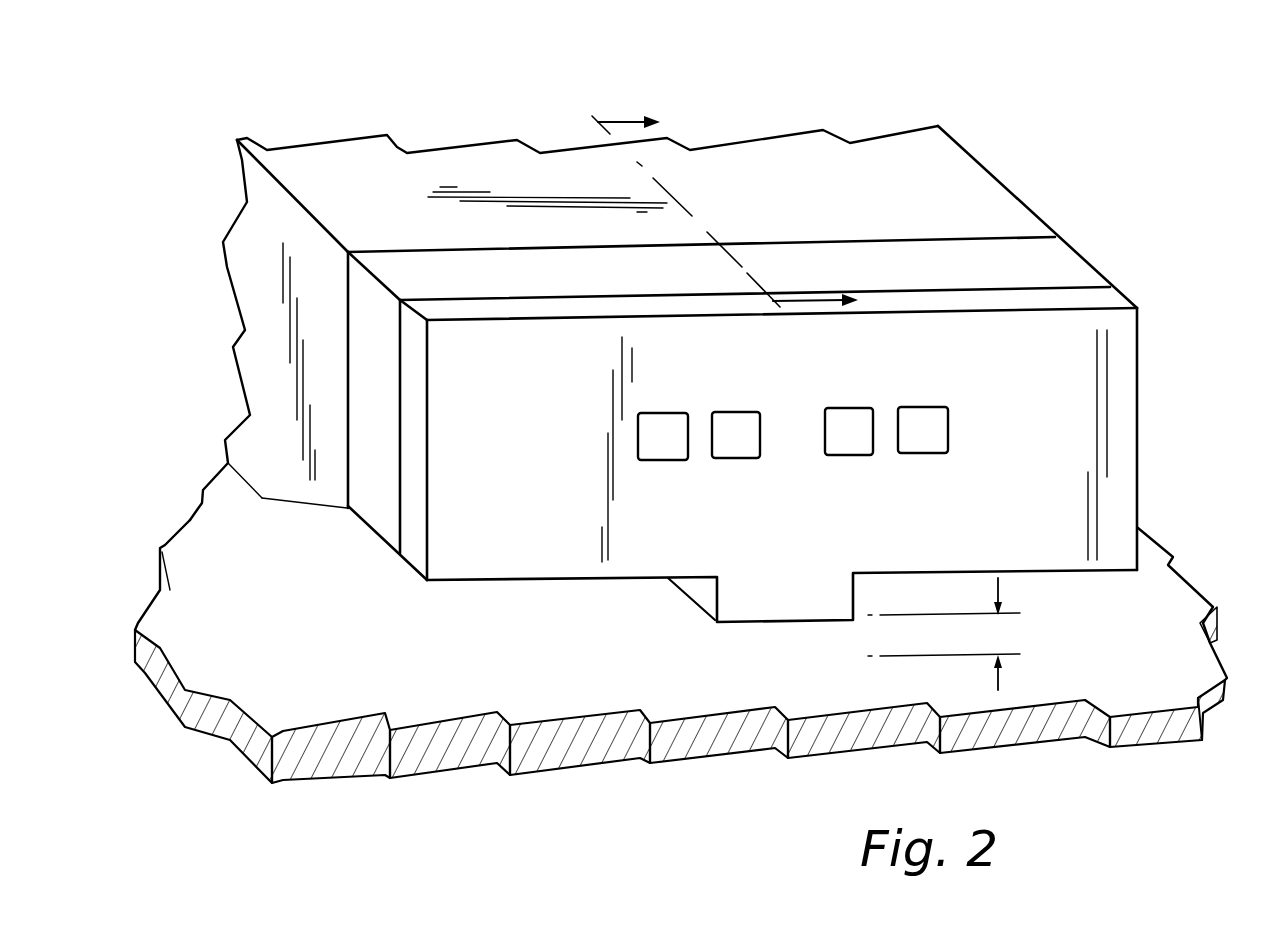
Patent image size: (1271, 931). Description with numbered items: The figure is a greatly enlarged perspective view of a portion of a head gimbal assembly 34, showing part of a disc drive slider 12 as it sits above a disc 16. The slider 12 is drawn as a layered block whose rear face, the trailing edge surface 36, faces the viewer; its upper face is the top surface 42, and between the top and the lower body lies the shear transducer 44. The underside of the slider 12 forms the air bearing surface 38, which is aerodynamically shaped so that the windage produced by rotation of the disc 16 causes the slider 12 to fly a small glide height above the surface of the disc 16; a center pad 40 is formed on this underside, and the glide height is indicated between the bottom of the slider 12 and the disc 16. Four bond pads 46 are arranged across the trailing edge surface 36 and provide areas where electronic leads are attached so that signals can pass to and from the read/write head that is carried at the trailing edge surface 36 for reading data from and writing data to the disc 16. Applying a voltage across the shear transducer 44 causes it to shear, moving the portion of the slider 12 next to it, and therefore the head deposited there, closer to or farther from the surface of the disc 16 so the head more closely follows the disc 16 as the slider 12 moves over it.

The head gimbal assembly 34 is at (1106, 113).
The disc drive slider 12 is at (697, 178).
The top surface 42 is at (852, 188).
The shear transducer 44 is at (1097, 268).
The trailing edge surface 36 is at (490, 388).
The bond pads 46 is at (950, 422).
The center pad 40 is at (732, 612).
The air bearing surface 38 is at (292, 547).
The disc 16 is at (262, 752).